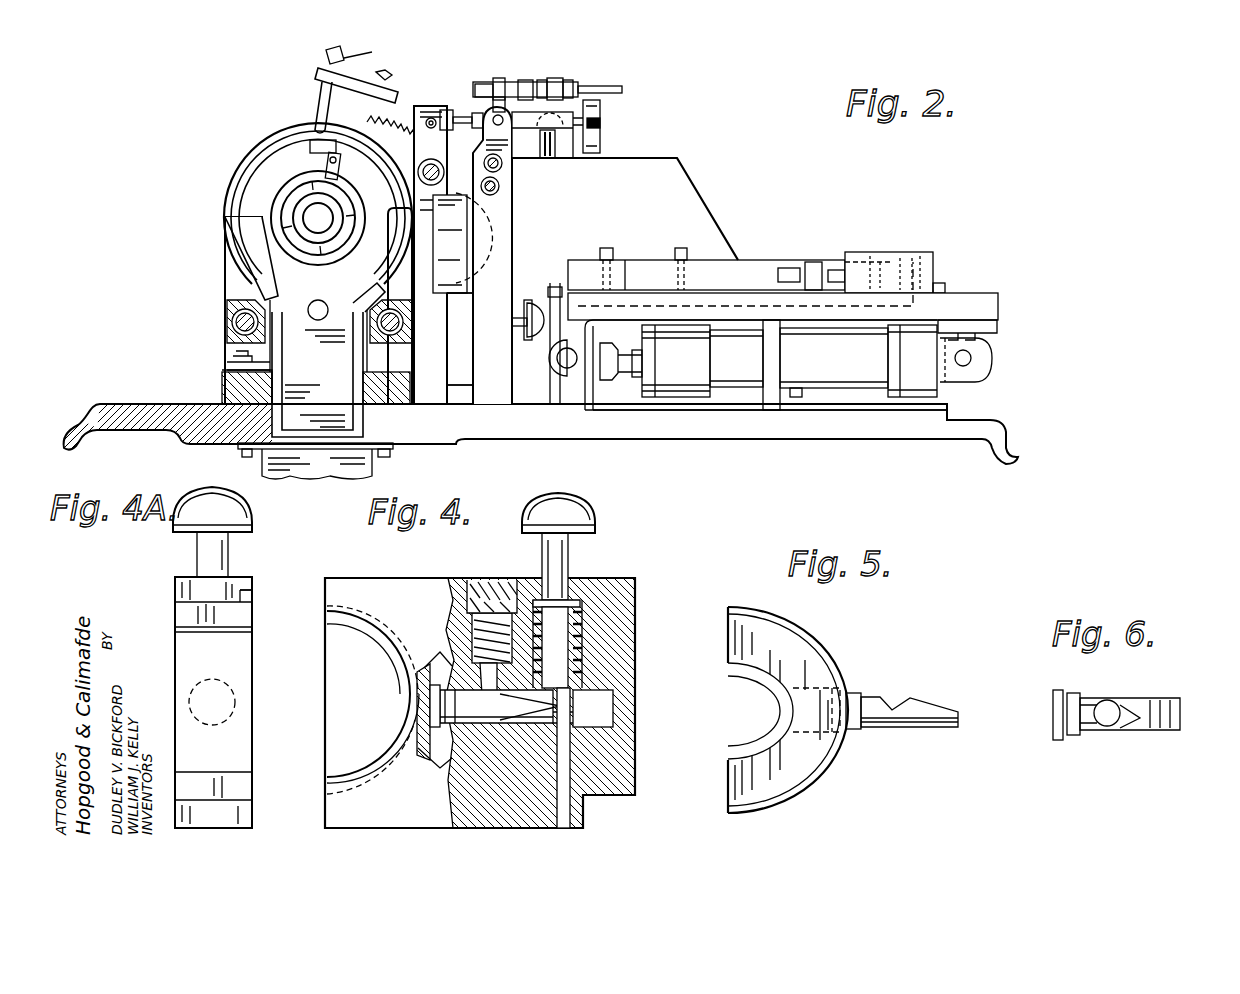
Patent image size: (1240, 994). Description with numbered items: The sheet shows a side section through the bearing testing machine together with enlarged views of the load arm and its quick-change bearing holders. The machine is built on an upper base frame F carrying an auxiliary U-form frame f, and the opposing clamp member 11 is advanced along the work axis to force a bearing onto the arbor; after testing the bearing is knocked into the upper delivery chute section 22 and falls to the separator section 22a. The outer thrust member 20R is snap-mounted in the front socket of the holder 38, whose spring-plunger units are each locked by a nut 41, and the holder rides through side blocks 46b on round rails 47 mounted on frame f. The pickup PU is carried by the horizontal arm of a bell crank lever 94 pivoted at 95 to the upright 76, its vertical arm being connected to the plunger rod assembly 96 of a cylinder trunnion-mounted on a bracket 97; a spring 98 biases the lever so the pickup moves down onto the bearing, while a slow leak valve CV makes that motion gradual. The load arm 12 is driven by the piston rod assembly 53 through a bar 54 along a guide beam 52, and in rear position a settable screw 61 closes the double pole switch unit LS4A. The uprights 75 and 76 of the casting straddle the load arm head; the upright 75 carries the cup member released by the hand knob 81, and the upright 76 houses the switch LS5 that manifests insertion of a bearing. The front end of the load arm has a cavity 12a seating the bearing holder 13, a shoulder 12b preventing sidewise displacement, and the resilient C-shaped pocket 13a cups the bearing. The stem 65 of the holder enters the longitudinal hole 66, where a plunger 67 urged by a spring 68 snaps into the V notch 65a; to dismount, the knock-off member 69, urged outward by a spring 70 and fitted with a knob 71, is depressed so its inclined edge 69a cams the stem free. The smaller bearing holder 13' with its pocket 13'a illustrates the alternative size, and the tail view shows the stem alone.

In FIG. 2, the upper base frame F is at (126, 404).
In FIG. 2, the auxiliary U-form frame f is at (225, 374).
In FIG. 2, the upper delivery chute section 22 is at (225, 228).
In FIG. 2, the separator section 22a is at (300, 470).
In FIG. 2, the opposing clamp member 11 is at (300, 210).
In FIG. 2, the outer thrust member 20R is at (283, 190).
In FIG. 2, the holder 38 is at (278, 172).
In FIG. 2, the nut 41 is at (338, 143).
In FIG. 2, the pickup PU is at (318, 92).
In FIG. 2, the spring 98 is at (372, 114).
In FIG. 2, the bell crank lever 94 is at (430, 106).
In FIG. 2, the pivot 95 is at (431, 151).
In FIG. 2, the plunger rod assembly 96 is at (474, 107).
In FIG. 2, the bracket 97 is at (512, 198).
In FIG. 2, the bearing holder 13 is at (506, 298).
In FIG. 4A, the bearing holder 13 is at (231, 702).
In FIG. 2, the slow leak valve CV is at (560, 84).
In FIG. 2, the knock-off member 69 is at (549, 158).
In FIG. 4, the knock-off member 69 is at (570, 556).
In FIG. 2, the load arm 12 is at (730, 258).
In FIG. 4, the load arm 12 is at (628, 578).
In FIG. 2, the settable screw 61 is at (780, 266).
In FIG. 2, the double pole switch unit LS4A is at (885, 262).
In FIG. 2, the guide beam 52 is at (975, 296).
In FIG. 2, the piston rod assembly 53 is at (605, 385).
In FIG. 2, the bar 54 is at (550, 290).
In FIG. 2, the hand knob 81 is at (534, 340).
In FIG. 2, the switch LS5 is at (456, 293).
In FIG. 2, the upright 76 is at (447, 385).
In FIG. 2, the upright 75 is at (380, 268).
In FIG. 2, the side blocks 46b is at (235, 312).
In FIG. 2, the round rails 47 is at (240, 322).
In FIG. 4A, the cavity 12a is at (230, 580).
In FIG. 4, the cavity 12a is at (440, 762).
In FIG. 4A, the shoulder 12b is at (252, 592).
In FIG. 4A, the pocket 13a is at (245, 716).
In FIG. 4, the pocket 13a is at (346, 628).
In FIG. 4A, the stem 65 is at (240, 688).
In FIG. 4, the stem 65 is at (491, 706).
In FIG. 5, the stem 65 is at (896, 727).
In FIG. 6, the stem 65 is at (1098, 728).
In FIG. 4, the V notch 65a is at (504, 720).
In FIG. 6, the V notch 65a is at (1112, 702).
In FIG. 4, the longitudinal hole 66 is at (613, 715).
In FIG. 4, the plunger 67 is at (472, 622).
In FIG. 4, the spring 68 is at (470, 612).
In FIG. 4, the inclined edge 69a is at (593, 708).
In FIG. 4, the spring 70 is at (585, 650).
In FIG. 4, the knob 71 is at (595, 504).
In FIG. 5, the bearing holder 13' is at (769, 710).
In FIG. 5, the pocket 13'a is at (785, 711).